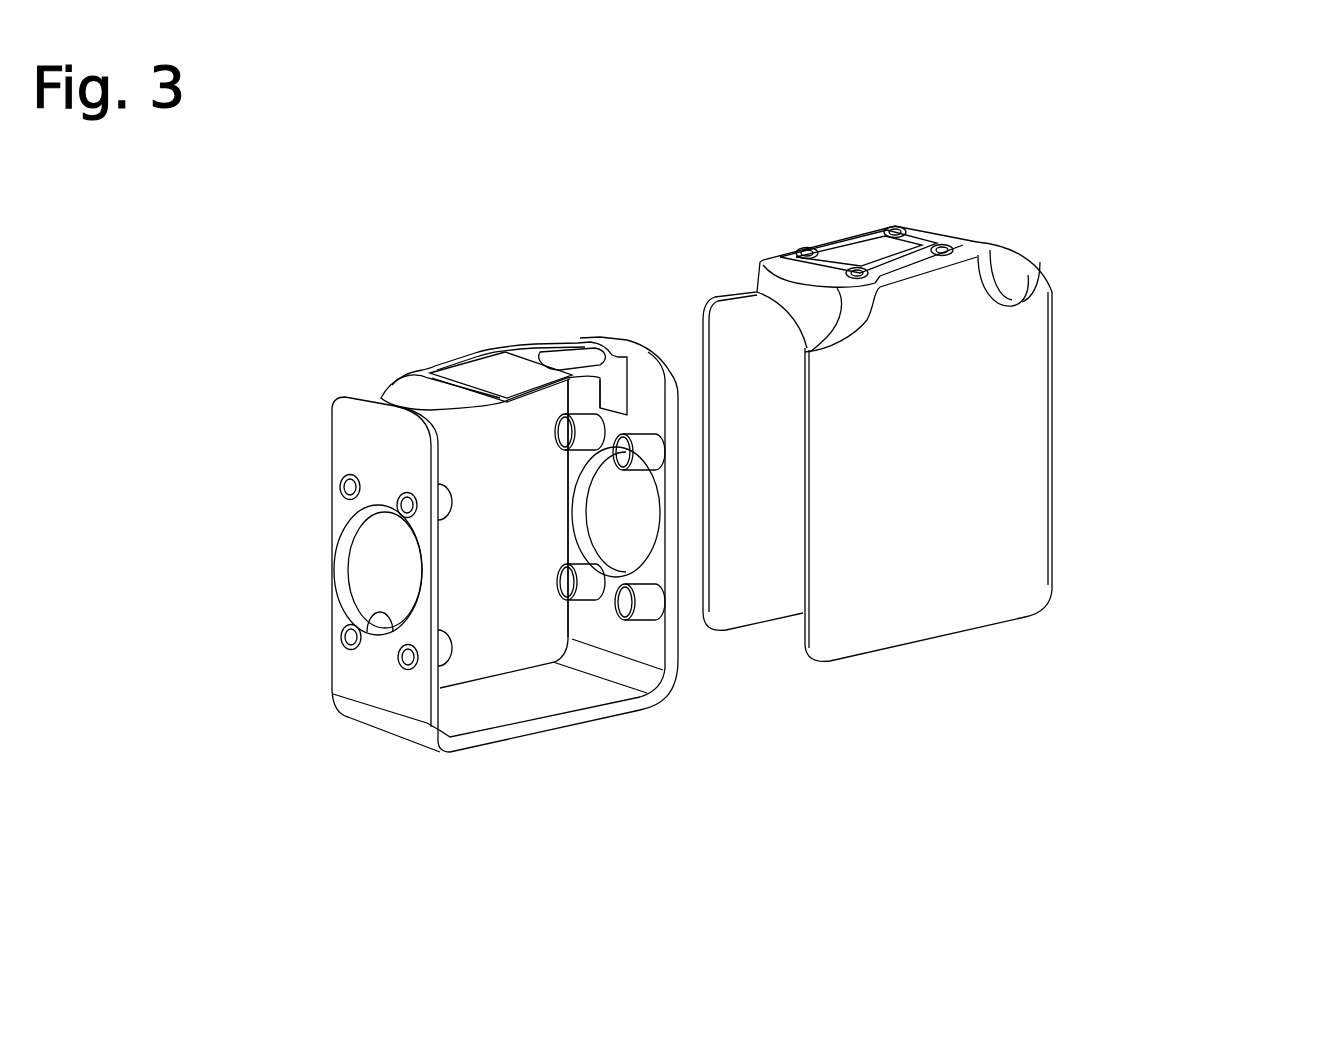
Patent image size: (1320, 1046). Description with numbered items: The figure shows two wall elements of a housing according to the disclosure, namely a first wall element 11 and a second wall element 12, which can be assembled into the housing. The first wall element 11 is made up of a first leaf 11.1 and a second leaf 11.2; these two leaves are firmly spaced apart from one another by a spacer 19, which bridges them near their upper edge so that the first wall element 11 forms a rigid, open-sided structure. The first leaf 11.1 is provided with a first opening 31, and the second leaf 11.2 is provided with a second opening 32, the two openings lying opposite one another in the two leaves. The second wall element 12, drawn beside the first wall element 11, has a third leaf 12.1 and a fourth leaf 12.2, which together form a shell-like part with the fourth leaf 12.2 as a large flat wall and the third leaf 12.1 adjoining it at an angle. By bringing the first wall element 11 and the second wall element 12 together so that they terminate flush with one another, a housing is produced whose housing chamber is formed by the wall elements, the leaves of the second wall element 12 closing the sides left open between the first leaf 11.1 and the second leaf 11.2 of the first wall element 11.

The first wall element 11 is at (583, 777).
The first leaf 11.1 is at (289, 627).
The second leaf 11.2 is at (473, 589).
The second wall element 12 is at (939, 532).
The third leaf 12.1 is at (735, 405).
The fourth leaf 12.2 is at (1032, 487).
The spacer 19 is at (425, 372).
The first opening 31 is at (365, 560).
The second opening 32 is at (608, 507).